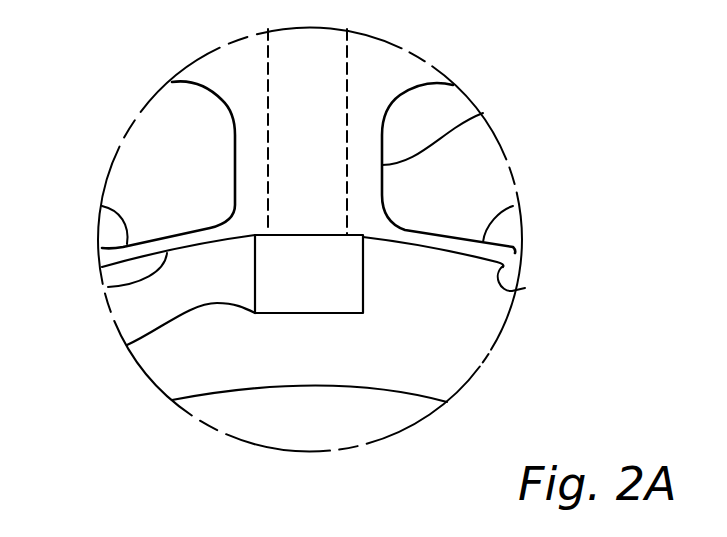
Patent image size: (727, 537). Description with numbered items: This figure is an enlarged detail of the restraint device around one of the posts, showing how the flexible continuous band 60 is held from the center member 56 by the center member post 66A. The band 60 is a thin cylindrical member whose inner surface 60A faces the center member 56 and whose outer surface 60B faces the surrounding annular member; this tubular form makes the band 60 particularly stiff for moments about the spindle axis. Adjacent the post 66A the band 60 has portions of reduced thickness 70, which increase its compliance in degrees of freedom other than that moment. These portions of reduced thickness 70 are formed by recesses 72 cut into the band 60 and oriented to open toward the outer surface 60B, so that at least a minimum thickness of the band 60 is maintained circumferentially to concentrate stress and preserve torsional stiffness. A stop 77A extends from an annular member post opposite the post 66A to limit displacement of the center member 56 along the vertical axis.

The center member 56 is at (412, 390).
The flexible continuous band 60 is at (525, 288).
The inner surface 60A is at (108, 287).
The outer surface 60B is at (513, 246).
The center member post 66A is at (483, 113).
The portion of reduced thickness 70 is at (163, 154).
The recess 72 is at (102, 206).
The stop 77A is at (127, 345).